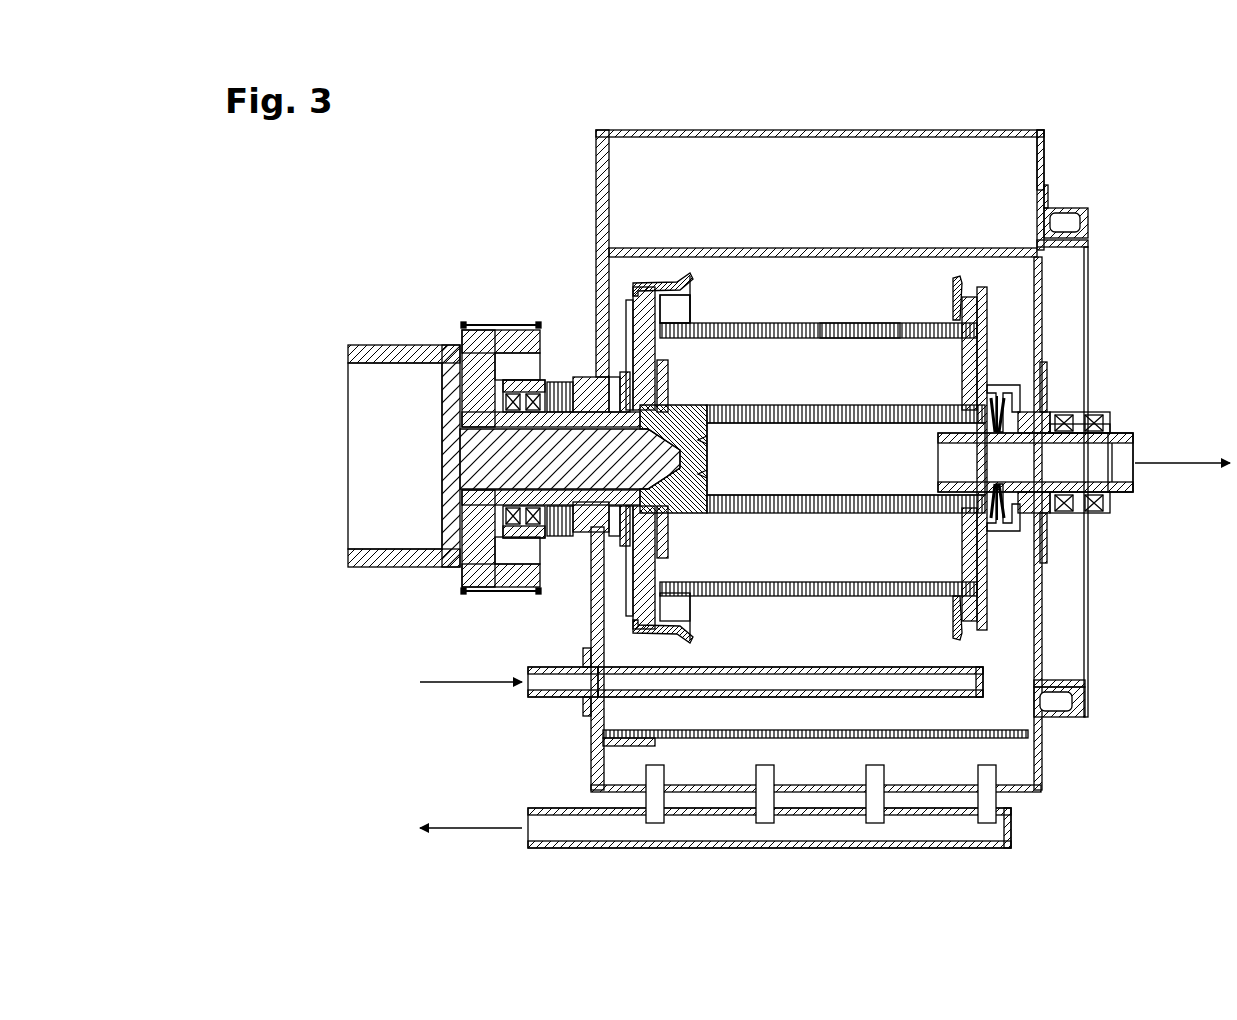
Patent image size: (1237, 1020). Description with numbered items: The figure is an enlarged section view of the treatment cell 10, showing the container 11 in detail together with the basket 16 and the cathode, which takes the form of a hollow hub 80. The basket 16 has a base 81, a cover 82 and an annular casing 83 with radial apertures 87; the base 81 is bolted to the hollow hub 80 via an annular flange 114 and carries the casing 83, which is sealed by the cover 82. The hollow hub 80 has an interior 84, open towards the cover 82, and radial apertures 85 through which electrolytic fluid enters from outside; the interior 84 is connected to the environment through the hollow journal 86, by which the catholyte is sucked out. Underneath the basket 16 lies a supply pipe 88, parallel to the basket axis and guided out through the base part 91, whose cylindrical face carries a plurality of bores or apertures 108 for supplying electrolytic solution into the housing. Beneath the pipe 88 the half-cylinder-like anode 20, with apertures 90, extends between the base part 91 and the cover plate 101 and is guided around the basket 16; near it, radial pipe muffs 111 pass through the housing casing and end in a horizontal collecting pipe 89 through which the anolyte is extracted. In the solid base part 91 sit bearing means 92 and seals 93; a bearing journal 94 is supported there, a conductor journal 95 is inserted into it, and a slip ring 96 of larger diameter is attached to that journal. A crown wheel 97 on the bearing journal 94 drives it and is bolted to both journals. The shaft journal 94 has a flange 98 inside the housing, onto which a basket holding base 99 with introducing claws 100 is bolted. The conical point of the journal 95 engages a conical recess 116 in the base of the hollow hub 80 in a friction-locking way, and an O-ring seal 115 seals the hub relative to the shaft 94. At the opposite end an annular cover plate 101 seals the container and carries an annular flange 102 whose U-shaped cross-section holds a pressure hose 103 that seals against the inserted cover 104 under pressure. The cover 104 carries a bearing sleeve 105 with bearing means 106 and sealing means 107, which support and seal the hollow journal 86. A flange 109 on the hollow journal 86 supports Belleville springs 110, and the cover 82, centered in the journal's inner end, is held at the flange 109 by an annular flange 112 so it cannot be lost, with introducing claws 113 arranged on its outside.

The treatment cell 10 is at (1162, 162).
The container 11 is at (930, 130).
The basket 16 is at (745, 283).
The anode 20 is at (597, 740).
The hollow hub 80 is at (700, 402).
The base 81 is at (680, 305).
The cover 82 is at (985, 318).
The annular casing 83 is at (770, 323).
The interior 84 is at (825, 440).
The radial apertures 85 is at (852, 405).
The hollow journal 86 is at (938, 440).
The radial apertures 87 is at (830, 323).
The supply pipe 88 is at (540, 667).
The collecting pipe 89 is at (542, 808).
The apertures 90 is at (735, 738).
The base part 91 is at (600, 190).
The bearing means 92 is at (483, 414).
The seals 93 is at (530, 382).
The bearing journal 94 is at (450, 352).
The conductor journal 95 is at (467, 447).
The slip ring 96 is at (398, 346).
The crown wheel 97 is at (470, 323).
The flange 98 is at (592, 376).
The basket holding base 99 is at (640, 300).
The introducing claws 100 is at (668, 286).
The annular cover plate 101 is at (1045, 150).
The annular flange 102 is at (1064, 209).
The pressure hose 103 is at (1082, 225).
The cover 104 is at (1050, 266).
The bearing sleeve 105 is at (1035, 412).
The bearing means 106 is at (1108, 430).
The sealing means 107 is at (1095, 424).
The apertures 108 is at (763, 668).
The flange 109 is at (1028, 400).
The Belleville springs 110 is at (1005, 398).
The muffs 111 is at (885, 782).
The annular flange 112 is at (1000, 385).
The introducing claws 113 is at (952, 292).
The annular flange 114 is at (668, 384).
The O-ring seal 115 is at (700, 474).
The conical recess 116 is at (700, 440).